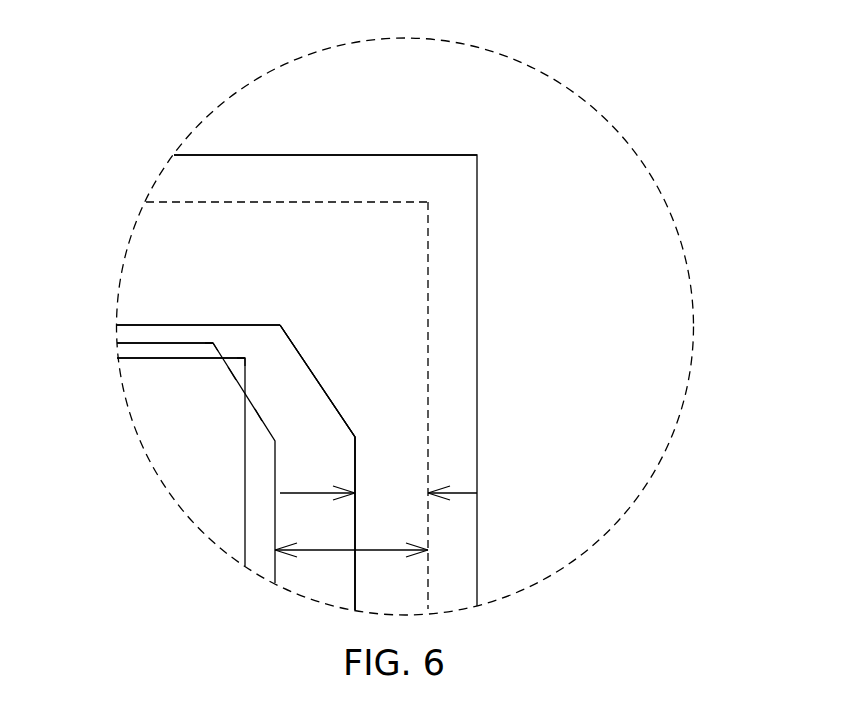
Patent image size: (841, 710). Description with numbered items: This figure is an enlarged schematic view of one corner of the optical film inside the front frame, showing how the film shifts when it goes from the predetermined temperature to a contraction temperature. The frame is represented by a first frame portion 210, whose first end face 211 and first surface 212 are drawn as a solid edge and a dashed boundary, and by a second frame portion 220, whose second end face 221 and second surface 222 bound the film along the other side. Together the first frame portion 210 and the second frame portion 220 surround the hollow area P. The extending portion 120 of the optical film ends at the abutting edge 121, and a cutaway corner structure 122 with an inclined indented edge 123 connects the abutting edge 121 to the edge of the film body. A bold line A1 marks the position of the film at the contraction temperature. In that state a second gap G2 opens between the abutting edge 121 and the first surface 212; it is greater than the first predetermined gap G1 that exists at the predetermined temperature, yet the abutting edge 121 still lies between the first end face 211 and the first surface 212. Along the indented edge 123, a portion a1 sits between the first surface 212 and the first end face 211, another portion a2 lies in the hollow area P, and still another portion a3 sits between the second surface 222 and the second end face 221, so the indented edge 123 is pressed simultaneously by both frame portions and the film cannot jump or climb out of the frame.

The first frame portion 210 is at (403, 452).
The first end face 211 is at (245, 487).
The first surface 212 is at (430, 515).
The second frame portion 220 is at (170, 240).
The second end face 221 is at (132, 393).
The second surface 222 is at (182, 202).
The extending portion 120 is at (313, 580).
The abutting edge 121 is at (357, 580).
The cutaway corner structure 122 is at (342, 387).
The indented edge 123 is at (342, 415).
The bold line A1 is at (132, 393).
The hollow area P is at (238, 370).
The portion of the indented edge a1 is at (262, 418).
The another portion of the indented edge a2 is at (235, 375).
The still another portion of the indented edge a3 is at (216, 350).
The first predetermined gap G1 is at (378, 482).
The second gap G2 is at (351, 538).